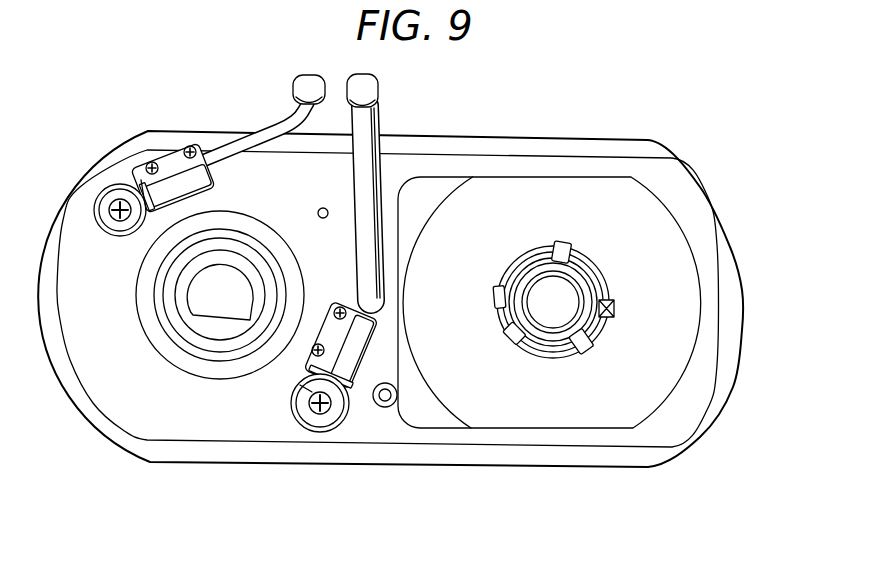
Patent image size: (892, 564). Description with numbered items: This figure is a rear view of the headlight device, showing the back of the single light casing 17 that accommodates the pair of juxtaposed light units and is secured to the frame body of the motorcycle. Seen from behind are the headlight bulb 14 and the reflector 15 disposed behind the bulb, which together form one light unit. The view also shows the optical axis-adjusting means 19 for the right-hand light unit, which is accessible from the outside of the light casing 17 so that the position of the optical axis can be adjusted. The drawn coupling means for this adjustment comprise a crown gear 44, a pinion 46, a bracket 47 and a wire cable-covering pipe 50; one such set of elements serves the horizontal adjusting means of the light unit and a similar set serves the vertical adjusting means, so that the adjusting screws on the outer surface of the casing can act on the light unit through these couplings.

The headlight bulb 14 is at (563, 293).
The reflector 15 is at (557, 418).
The light casing 17 is at (640, 137).
The optical axis-adjusting means 19 is at (222, 104).
The crown gear 44 is at (86, 205).
The pinion 46 is at (147, 213).
The bracket 47 is at (173, 175).
The wire cable-covering pipe 50 is at (270, 128).